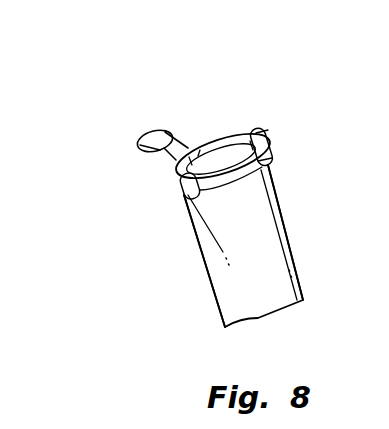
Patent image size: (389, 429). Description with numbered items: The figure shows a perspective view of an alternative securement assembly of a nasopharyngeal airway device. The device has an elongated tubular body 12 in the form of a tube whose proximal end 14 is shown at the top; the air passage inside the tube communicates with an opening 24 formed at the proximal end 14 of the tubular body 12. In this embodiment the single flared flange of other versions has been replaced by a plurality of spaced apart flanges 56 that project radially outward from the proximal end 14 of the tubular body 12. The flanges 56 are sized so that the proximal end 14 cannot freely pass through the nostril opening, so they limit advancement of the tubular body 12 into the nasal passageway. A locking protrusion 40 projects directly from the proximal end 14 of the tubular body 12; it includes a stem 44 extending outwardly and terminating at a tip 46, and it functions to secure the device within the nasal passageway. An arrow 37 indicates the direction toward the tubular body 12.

The tubular body 12 is at (278, 225).
The proximal end 14 is at (270, 143).
The opening 24 is at (248, 132).
The insertion direction arrow 37 is at (226, 120).
The locking protrusion 40 is at (40, 108).
The stem 44 is at (162, 158).
The tip 46 is at (138, 140).
The flanges 56 is at (266, 131).